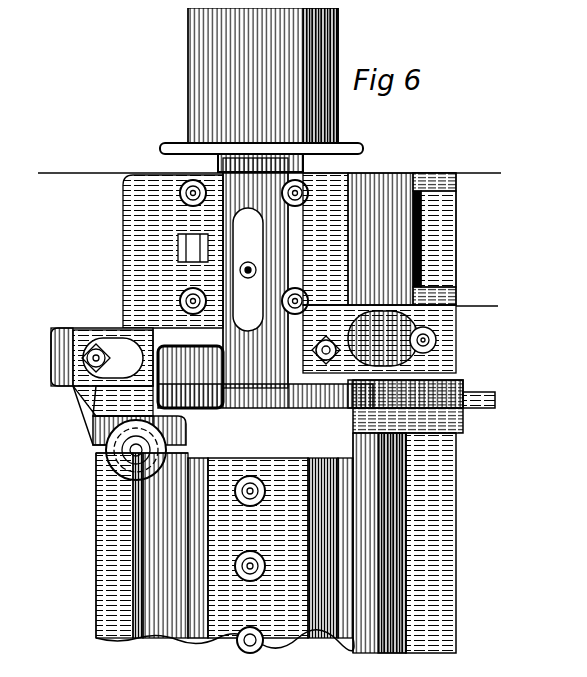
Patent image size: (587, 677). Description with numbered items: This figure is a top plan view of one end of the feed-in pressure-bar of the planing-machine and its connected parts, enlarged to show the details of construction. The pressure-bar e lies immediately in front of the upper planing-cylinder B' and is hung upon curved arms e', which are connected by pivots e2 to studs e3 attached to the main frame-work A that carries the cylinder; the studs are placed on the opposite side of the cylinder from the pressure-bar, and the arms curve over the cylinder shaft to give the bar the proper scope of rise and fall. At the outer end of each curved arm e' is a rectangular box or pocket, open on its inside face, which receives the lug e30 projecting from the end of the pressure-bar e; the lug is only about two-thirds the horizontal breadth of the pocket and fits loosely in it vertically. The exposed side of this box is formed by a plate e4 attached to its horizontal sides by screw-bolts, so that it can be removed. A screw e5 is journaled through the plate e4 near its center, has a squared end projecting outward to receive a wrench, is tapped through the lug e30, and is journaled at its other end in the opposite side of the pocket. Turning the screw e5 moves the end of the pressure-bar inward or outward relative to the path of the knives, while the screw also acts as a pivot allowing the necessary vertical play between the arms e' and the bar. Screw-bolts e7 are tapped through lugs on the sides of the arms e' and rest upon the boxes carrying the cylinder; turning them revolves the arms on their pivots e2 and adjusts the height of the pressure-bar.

The main frame-work A is at (482, 164).
The pressure-bar e is at (428, 543).
The curved arms e' is at (265, 421).
The pivots e2 is at (172, 322).
The studs e3 is at (115, 320).
The plate e4 is at (458, 412).
The screw e5 is at (490, 390).
The screw-bolts e7 is at (452, 296).
The lug e30 is at (452, 362).
The upper planing-cylinder B' is at (270, 652).